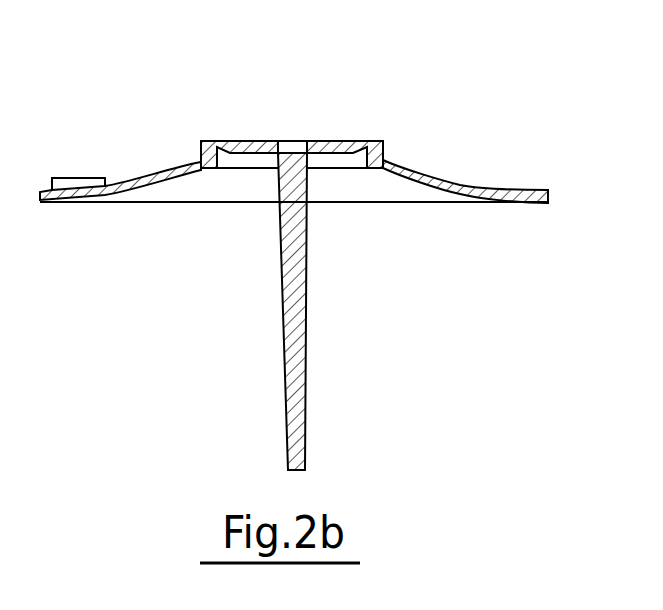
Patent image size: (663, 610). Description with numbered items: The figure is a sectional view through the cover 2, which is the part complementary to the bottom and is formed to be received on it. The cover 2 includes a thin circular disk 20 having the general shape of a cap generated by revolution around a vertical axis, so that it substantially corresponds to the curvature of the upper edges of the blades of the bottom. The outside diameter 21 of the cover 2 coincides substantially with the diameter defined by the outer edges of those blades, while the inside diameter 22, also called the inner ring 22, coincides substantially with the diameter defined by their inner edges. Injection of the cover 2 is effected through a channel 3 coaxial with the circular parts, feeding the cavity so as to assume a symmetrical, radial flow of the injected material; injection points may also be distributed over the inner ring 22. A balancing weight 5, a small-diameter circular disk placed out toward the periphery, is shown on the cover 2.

The cover 2 is at (552, 154).
The channel 3 is at (287, 377).
The balancing weight 5 is at (82, 179).
The thin circular disk 20 is at (492, 189).
The outside diameter 21 is at (549, 197).
The inside diameter (inner ring) 22 is at (366, 141).